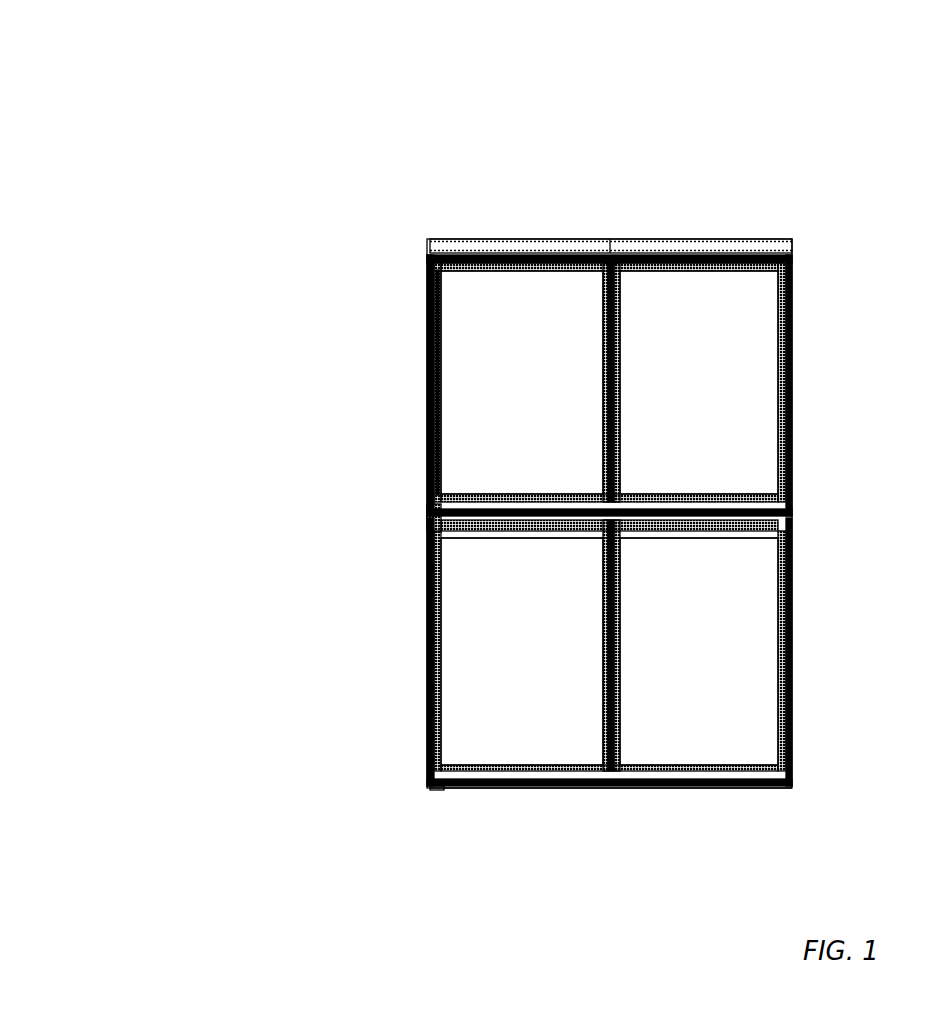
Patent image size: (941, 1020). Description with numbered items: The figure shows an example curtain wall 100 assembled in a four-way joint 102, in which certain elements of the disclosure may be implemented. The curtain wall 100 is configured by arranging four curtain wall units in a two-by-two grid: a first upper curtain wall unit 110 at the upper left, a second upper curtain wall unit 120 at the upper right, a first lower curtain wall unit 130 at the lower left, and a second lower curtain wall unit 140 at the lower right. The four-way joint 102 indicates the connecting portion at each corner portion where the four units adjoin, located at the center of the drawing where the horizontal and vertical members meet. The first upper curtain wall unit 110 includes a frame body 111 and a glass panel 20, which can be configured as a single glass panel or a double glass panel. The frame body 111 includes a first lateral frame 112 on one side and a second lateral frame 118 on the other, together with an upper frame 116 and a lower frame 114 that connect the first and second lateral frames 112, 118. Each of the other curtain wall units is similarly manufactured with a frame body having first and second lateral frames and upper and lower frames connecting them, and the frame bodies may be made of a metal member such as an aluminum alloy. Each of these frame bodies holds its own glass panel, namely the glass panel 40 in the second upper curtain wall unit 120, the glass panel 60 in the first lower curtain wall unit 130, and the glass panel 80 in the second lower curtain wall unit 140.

The curtain wall 100 is at (292, 160).
The four-way joint 102 is at (621, 512).
The first upper curtain wall unit 110 is at (420, 362).
The frame body 111 is at (412, 478).
The first lateral frame 112 is at (427, 436).
The lower frame 114 is at (450, 515).
The upper frame 116 is at (518, 258).
The second lateral frame 118 is at (615, 266).
The second upper curtain wall unit 120 is at (800, 380).
The first lower curtain wall unit 130 is at (420, 668).
The second lower curtain wall unit 140 is at (800, 630).
The glass panel 20 is at (522, 382).
The glass panel 40 is at (699, 382).
The glass panel 60 is at (522, 651).
The glass panel 80 is at (699, 651).